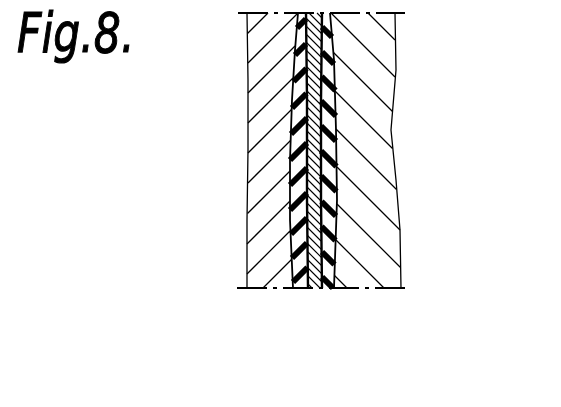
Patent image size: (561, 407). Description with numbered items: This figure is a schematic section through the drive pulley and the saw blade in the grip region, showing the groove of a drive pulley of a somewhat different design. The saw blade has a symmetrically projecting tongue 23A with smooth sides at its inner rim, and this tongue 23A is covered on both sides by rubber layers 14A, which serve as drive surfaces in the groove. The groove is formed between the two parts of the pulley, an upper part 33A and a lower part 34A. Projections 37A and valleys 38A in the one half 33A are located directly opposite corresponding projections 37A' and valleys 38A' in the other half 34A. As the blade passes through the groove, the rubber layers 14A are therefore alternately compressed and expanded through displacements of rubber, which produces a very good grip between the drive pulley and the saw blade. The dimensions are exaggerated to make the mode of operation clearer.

The rubber layers 14A is at (303, 289).
The tongue 23A is at (311, 290).
The upper part of the drive pulley groove 33A is at (248, 260).
The lower part of the drive pulley groove 34A is at (400, 222).
The projections 37A is at (240, 63).
The projections 37A' is at (409, 58).
The valleys 38A is at (239, 200).
The valleys 38A' is at (409, 194).